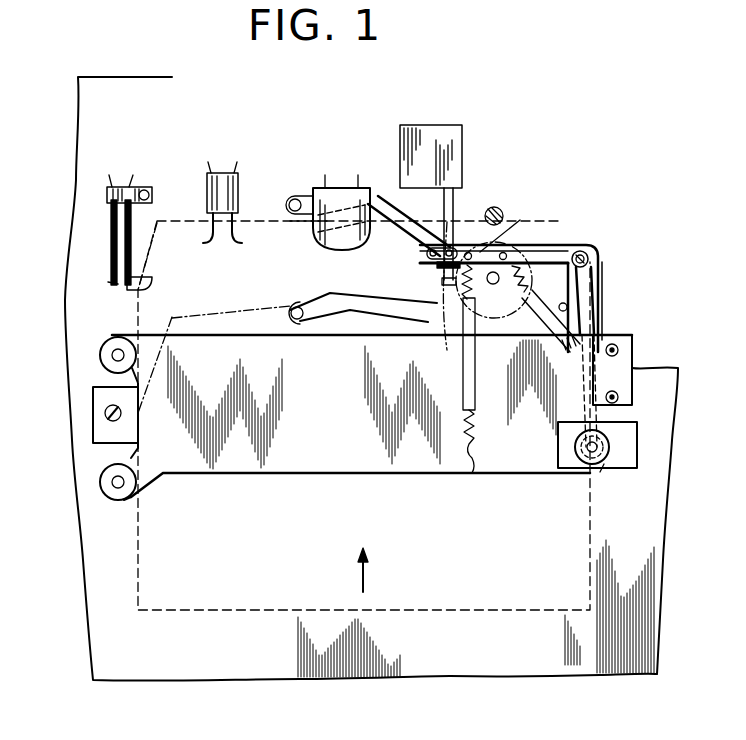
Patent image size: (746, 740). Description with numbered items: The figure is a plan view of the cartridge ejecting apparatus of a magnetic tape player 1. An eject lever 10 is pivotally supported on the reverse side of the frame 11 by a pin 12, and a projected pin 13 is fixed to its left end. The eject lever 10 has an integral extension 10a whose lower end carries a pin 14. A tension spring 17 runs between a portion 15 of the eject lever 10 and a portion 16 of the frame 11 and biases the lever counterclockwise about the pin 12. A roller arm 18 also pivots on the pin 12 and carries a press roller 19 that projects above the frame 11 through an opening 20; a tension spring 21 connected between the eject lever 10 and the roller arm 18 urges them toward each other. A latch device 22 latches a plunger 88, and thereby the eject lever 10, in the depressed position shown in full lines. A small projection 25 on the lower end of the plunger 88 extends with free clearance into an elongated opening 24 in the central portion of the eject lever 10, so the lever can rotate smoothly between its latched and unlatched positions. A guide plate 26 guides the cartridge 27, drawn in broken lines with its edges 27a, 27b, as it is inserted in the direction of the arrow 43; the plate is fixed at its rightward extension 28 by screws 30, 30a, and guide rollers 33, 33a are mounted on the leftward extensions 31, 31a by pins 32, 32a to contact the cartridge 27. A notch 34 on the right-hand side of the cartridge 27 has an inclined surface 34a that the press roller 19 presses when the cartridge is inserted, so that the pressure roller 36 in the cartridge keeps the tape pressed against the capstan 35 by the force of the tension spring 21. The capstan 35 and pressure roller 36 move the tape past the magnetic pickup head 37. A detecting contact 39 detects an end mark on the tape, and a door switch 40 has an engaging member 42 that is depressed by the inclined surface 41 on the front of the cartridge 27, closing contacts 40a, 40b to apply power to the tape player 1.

The magnetic tape player 1 is at (546, 153).
The eject lever 10 is at (566, 236).
The extension 10a is at (603, 286).
The frame 11 is at (672, 420).
The pin 12 is at (598, 258).
The projected pin 13 is at (293, 199).
The pin 14 is at (560, 318).
The portion of eject lever 15 is at (524, 240).
The portion of frame 16 is at (472, 476).
The tension spring 17 is at (478, 430).
The roller arm 18 is at (596, 322).
The press roller 19 is at (608, 470).
The opening 20 is at (640, 450).
The tension spring 21 is at (494, 280).
The latch device 22 is at (462, 142).
The elongated opening 24 is at (428, 258).
The small projection 25 is at (443, 264).
The guide plate 26 is at (205, 476).
The cartridge 27 is at (140, 574).
The slot edge 27a is at (270, 318).
The slot edge 27b is at (290, 224).
The rightward extension 28 is at (636, 352).
The screw 30 is at (616, 354).
The screw 30a is at (105, 412).
The leftward extension 31 is at (132, 338).
The leftward extension 31a is at (136, 500).
The pin 32 is at (110, 356).
The pin 32a is at (110, 483).
The guide roller 33 is at (105, 344).
The guide roller 33a is at (118, 500).
The notch 34 is at (573, 456).
The inclined surface 34a is at (580, 444).
The capstan 35 is at (500, 214).
The pressure roller 36 is at (446, 344).
The magnetic pickup head 37 is at (320, 244).
The detecting contact 39 is at (207, 183).
The door switch 40 is at (122, 185).
The contact 40a is at (112, 282).
The contact 40b is at (118, 262).
The inclined surface 41 is at (157, 247).
The engaging member 42 is at (150, 287).
The arrow 43 is at (365, 576).
The plunger 88 is at (455, 202).